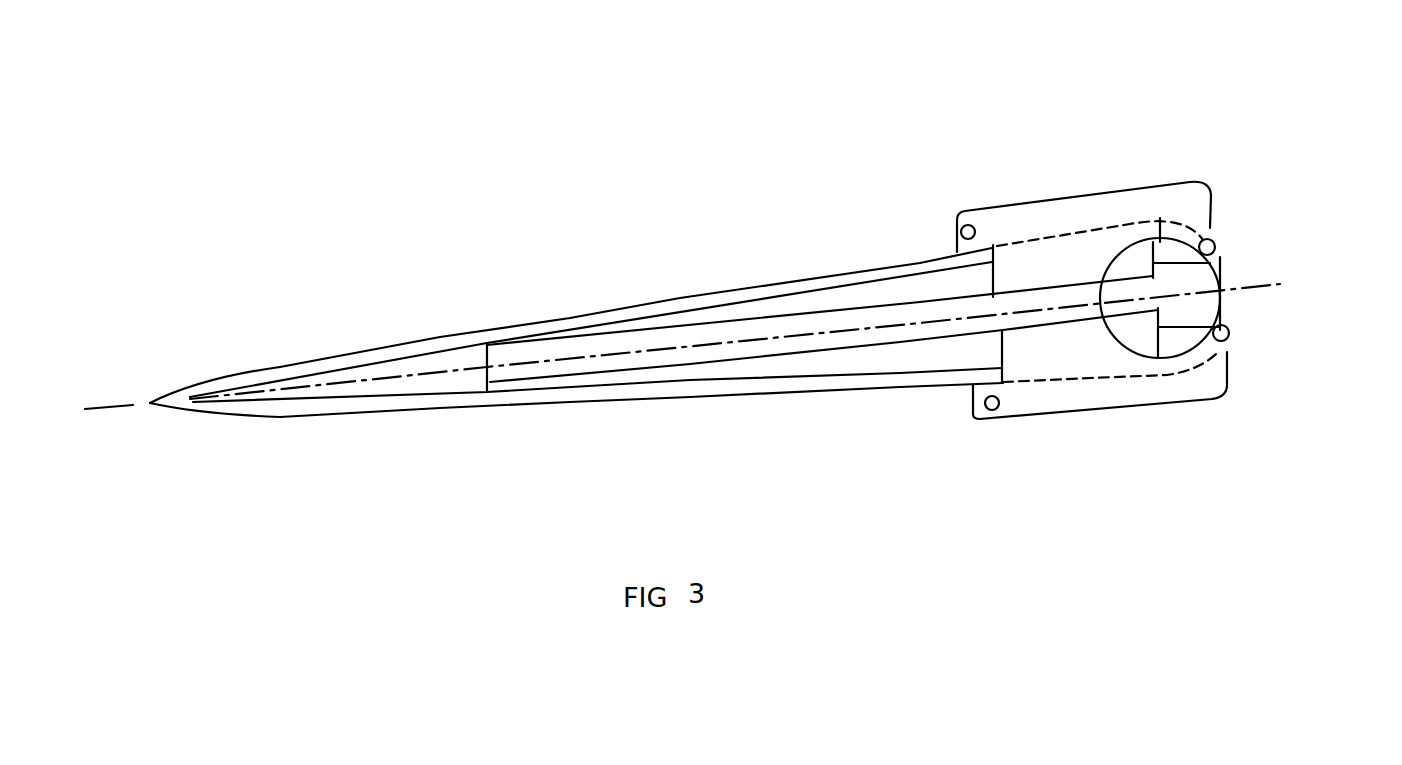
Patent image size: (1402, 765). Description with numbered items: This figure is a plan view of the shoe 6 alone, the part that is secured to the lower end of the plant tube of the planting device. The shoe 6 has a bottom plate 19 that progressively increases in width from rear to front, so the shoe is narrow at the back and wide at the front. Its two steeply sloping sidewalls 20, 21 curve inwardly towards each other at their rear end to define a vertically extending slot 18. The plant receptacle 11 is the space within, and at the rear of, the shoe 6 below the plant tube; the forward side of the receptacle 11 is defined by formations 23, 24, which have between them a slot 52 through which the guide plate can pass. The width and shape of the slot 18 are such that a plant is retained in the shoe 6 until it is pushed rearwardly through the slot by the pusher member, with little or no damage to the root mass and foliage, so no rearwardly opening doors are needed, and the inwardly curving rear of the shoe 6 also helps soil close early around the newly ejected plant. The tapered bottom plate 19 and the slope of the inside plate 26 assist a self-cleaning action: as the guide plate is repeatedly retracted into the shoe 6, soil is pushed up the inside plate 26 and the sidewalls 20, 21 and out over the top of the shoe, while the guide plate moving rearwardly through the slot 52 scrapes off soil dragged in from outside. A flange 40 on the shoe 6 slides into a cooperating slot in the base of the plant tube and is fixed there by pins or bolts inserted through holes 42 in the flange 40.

The shoe 6 is at (392, 210).
The plant receptacle 11 is at (1220, 268).
The vertically extending slot 18 is at (1223, 293).
The bottom plate 19 is at (860, 340).
The sidewall 20 is at (793, 368).
The sidewall 21 is at (693, 315).
The formation 23 is at (1228, 320).
The formation 24 is at (1220, 212).
The inside plate 26 is at (543, 352).
The flange 40 is at (1040, 218).
The holes 42 is at (958, 212).
The slot 52 is at (1128, 302).